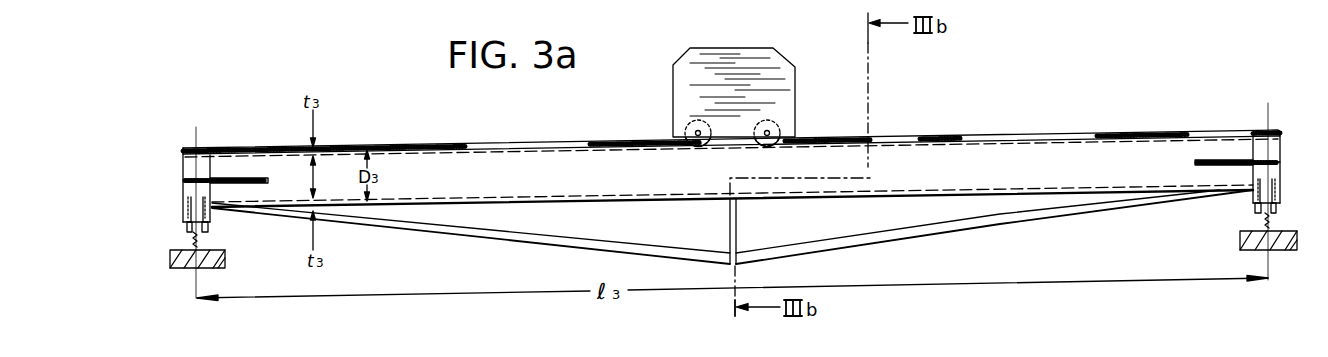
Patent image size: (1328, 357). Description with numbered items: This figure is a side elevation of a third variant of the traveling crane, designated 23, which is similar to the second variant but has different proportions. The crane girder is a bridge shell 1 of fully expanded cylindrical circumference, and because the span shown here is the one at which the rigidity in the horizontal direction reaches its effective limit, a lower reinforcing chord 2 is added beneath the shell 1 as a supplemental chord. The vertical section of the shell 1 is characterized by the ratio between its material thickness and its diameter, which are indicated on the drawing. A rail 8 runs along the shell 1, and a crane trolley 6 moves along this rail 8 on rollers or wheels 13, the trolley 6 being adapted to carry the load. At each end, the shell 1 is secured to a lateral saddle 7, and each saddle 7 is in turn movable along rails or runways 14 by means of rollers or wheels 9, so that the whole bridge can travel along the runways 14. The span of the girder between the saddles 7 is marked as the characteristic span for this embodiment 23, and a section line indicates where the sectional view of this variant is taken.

The bridge shell 1 is at (851, 174).
The lower reinforcing chord 2 is at (915, 236).
The crane trolley 6 is at (808, 58).
The lateral saddle 7 is at (185, 193).
The rail 8 is at (1012, 131).
The rollers or wheels 9 is at (188, 223).
The rollers or wheels 13 is at (756, 146).
The rails or runways 14 is at (207, 244).
The crane embodiment 23 is at (900, 106).